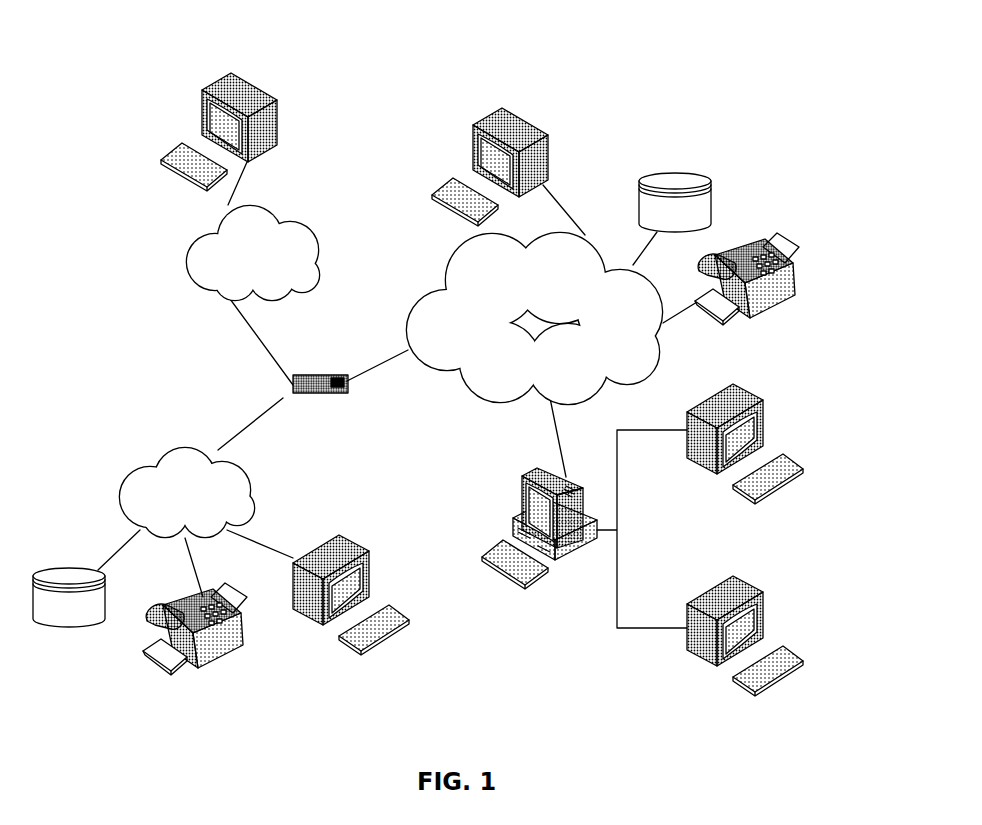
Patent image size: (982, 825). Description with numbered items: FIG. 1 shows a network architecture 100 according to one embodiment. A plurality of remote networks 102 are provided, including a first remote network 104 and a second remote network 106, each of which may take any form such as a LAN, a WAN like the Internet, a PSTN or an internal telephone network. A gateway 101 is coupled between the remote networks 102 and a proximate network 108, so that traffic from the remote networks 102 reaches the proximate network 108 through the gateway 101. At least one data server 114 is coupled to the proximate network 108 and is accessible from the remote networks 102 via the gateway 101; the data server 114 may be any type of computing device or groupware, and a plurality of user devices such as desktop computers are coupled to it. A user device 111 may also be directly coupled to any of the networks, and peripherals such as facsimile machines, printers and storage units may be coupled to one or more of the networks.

The network architecture 100 is at (149, 62).
The gateway 101 is at (307, 374).
The remote networks 102 is at (174, 299).
The first remote network 104 is at (120, 470).
The second remote network 106 is at (314, 222).
The proximate network 108 is at (632, 374).
The user device 111 is at (547, 137).
The data server 114 is at (522, 489).